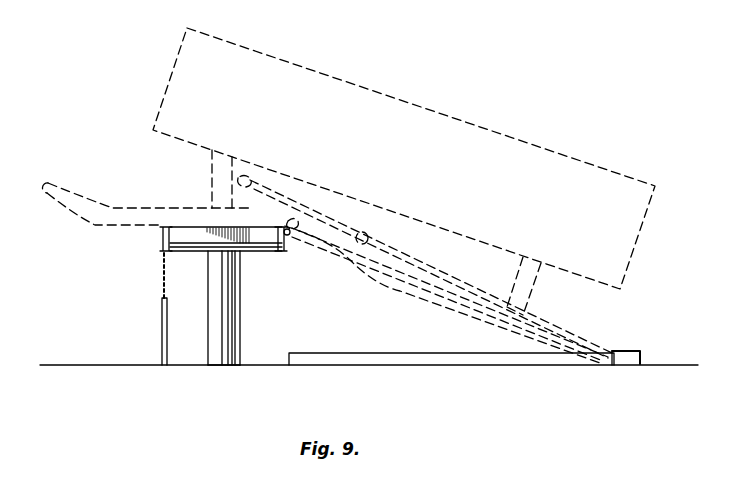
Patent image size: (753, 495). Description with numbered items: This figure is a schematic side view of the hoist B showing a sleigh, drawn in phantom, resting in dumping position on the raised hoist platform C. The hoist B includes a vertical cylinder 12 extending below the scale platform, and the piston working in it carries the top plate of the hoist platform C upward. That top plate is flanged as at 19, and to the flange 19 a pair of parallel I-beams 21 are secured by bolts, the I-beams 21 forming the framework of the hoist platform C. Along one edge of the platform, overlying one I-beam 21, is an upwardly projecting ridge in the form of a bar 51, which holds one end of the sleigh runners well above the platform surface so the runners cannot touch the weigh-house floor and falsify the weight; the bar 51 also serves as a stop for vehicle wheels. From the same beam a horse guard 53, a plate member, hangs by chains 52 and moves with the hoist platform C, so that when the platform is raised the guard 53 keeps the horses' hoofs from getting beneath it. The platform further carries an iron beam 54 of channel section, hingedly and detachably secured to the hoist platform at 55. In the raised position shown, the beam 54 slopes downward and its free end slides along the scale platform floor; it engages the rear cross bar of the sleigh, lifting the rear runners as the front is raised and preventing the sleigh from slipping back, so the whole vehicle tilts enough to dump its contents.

The bar 51 is at (166, 227).
The I-beams 21 is at (160, 242).
The chains 52 is at (160, 276).
The horse guard 53 is at (160, 325).
The flange 19 is at (263, 238).
The hinged detachable connection 55 is at (335, 250).
The iron beam 54 is at (362, 244).
The cylinder 12 is at (223, 350).
The hoist B is at (241, 305).
The hoist platform C is at (207, 231).